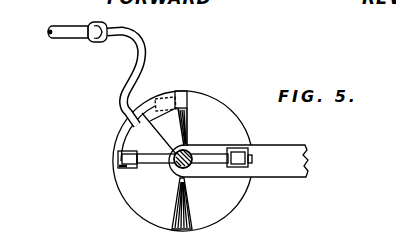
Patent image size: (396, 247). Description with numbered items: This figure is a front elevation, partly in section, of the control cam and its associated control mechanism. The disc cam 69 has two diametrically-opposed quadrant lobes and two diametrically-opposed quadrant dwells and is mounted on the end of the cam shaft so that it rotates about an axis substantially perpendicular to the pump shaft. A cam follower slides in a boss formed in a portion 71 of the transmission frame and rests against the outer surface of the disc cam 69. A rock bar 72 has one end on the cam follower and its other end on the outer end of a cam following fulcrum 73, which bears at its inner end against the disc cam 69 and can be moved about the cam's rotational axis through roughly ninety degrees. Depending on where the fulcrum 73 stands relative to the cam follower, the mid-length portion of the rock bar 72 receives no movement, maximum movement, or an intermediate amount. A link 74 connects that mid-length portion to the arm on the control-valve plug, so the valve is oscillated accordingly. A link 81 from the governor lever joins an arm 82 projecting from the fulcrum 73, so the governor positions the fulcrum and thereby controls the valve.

The disc cam 69 is at (121, 193).
The portion of the transmission frame 71 is at (289, 147).
The rock bar 72 is at (210, 157).
The cam following fulcrum 73 is at (130, 131).
The link 74 is at (177, 169).
The link 81 is at (64, 27).
The arm 82 is at (127, 80).